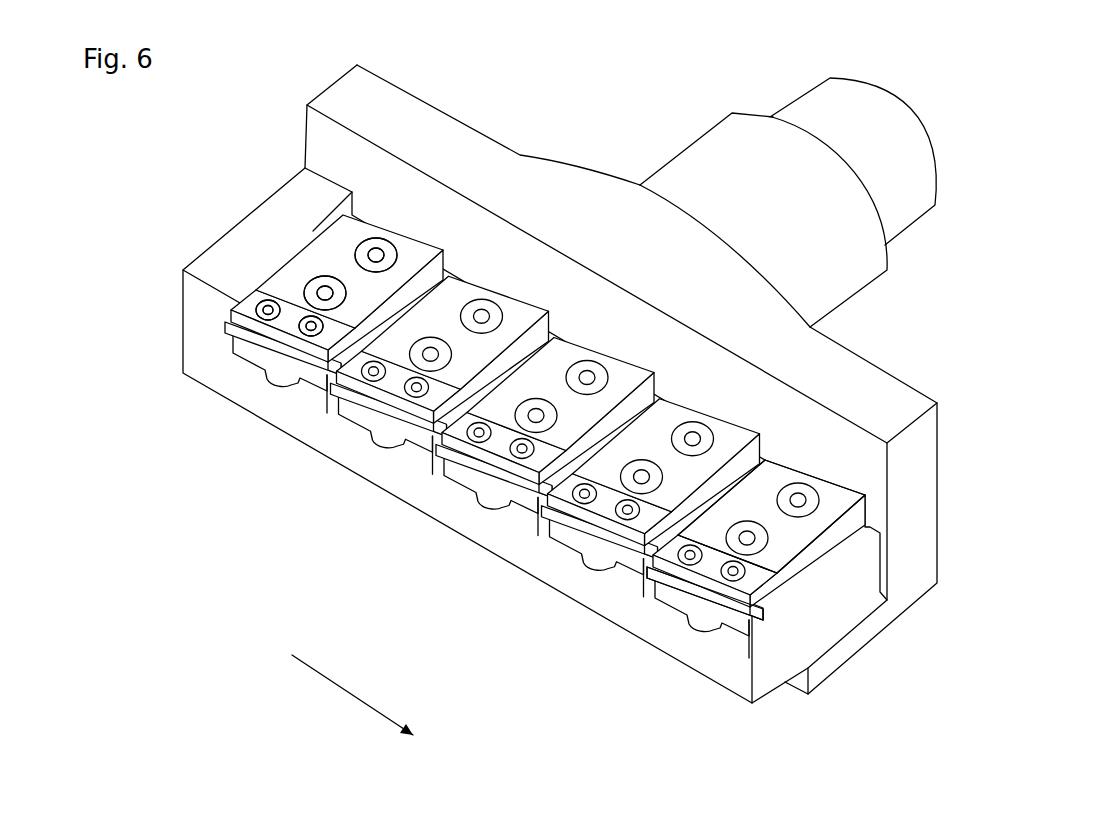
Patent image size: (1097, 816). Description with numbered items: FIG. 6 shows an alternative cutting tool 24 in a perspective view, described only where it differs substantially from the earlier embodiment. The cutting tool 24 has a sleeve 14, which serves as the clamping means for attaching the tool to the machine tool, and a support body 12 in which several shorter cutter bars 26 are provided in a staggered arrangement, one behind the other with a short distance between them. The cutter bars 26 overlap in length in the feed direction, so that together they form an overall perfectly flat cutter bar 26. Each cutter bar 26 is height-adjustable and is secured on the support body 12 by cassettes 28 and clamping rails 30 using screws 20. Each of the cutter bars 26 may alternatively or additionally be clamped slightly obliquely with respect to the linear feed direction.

The support body 12 is at (910, 452).
The sleeve 14 is at (898, 160).
The screws 20 is at (370, 250).
The cutting tool 24 is at (937, 309).
The cutter bars 26 is at (562, 467).
The cassettes 28 is at (823, 513).
The clamping rails 30 is at (753, 582).